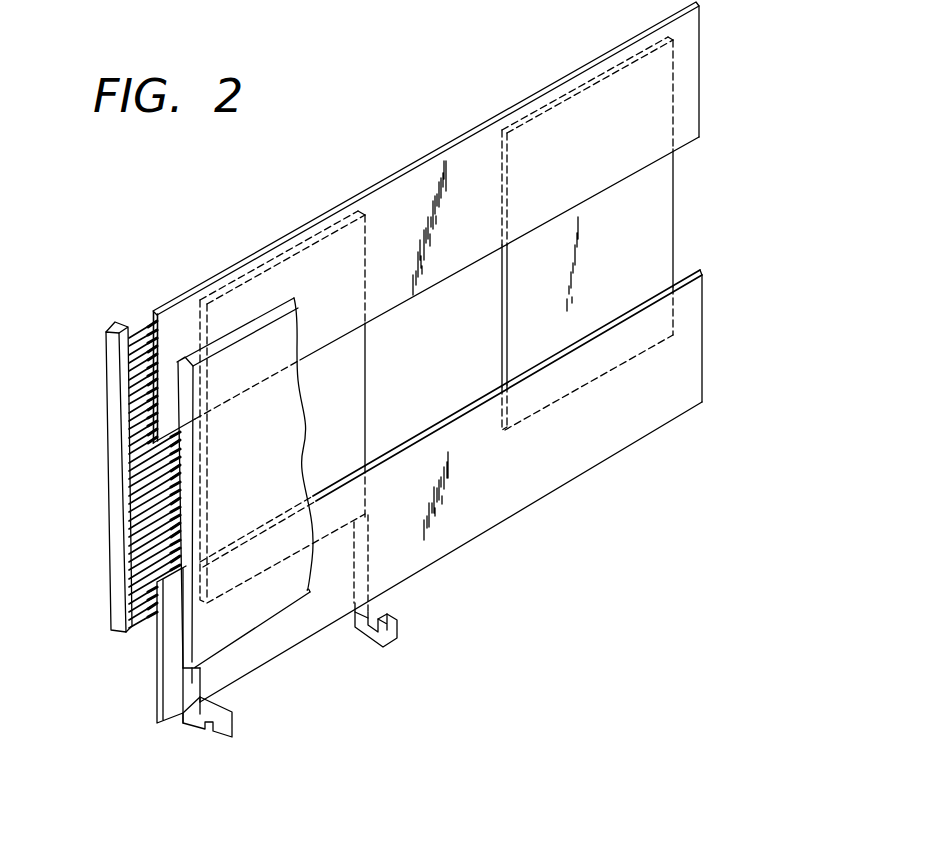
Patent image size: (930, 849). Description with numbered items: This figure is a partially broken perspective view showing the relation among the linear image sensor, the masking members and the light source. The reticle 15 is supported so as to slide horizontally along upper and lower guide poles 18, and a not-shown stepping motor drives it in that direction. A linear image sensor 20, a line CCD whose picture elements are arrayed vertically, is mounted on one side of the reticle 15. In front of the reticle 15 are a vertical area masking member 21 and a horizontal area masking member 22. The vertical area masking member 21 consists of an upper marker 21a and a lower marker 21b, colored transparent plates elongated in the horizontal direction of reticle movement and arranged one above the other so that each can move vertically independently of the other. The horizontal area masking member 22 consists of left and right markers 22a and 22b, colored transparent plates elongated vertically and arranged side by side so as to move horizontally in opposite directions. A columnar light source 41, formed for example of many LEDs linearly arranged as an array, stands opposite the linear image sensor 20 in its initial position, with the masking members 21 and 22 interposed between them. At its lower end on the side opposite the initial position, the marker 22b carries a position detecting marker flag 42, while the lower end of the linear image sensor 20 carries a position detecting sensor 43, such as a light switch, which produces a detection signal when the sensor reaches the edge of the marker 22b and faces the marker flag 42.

The reticle 15 is at (277, 607).
The guide poles 18 is at (426, 224).
The linear image sensor 20 is at (183, 630).
The vertical area masking member 21 is at (363, 189).
The upper marker 21a is at (435, 178).
The lower marker 21b is at (482, 527).
The horizontal area masking member 22 is at (675, 188).
The marker 22a is at (650, 240).
The marker 22b is at (354, 388).
The columnar light source 41 is at (109, 390).
The position detecting marker flag 42 is at (388, 643).
The position detecting sensor 43 is at (232, 745).